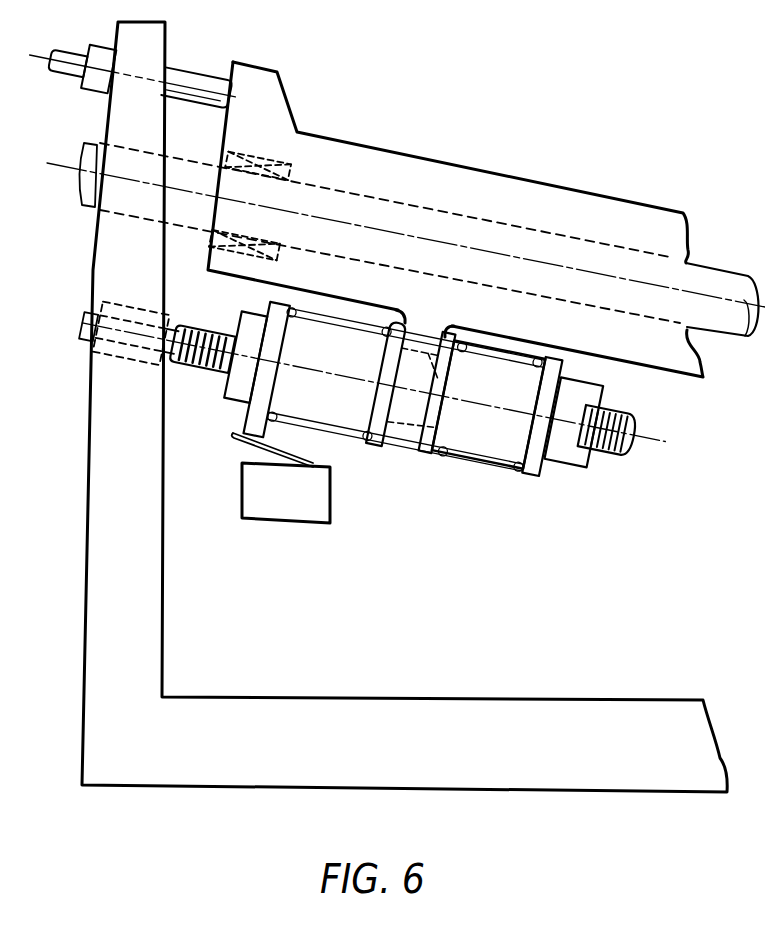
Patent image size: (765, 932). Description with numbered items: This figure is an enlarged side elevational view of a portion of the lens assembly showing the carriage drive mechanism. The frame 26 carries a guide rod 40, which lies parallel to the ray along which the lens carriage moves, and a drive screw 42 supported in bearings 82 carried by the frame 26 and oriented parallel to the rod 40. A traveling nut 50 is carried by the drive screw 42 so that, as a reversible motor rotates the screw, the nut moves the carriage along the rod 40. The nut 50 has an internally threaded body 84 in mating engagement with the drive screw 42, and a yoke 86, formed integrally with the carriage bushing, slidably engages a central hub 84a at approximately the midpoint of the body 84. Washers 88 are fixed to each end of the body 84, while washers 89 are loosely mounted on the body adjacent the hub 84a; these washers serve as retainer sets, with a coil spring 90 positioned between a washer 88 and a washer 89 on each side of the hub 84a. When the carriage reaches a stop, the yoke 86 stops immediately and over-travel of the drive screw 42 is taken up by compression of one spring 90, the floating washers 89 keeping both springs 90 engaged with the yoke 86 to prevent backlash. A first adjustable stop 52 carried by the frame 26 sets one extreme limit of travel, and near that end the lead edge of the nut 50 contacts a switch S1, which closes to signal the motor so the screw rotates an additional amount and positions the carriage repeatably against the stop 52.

The frame 26 is at (90, 537).
The guide rod 40 is at (180, 226).
The drive screw 42 is at (627, 410).
The traveling nut 50 is at (557, 462).
The first adjustable stop 52 is at (177, 68).
The bearings 82 is at (145, 306).
The internally threaded body 84 is at (472, 440).
The central hub 84a is at (455, 388).
The yoke 86 is at (410, 457).
The washers 88 is at (270, 303).
The washers 89 is at (450, 330).
The coil spring 90 is at (342, 438).
The switch S1 is at (240, 497).